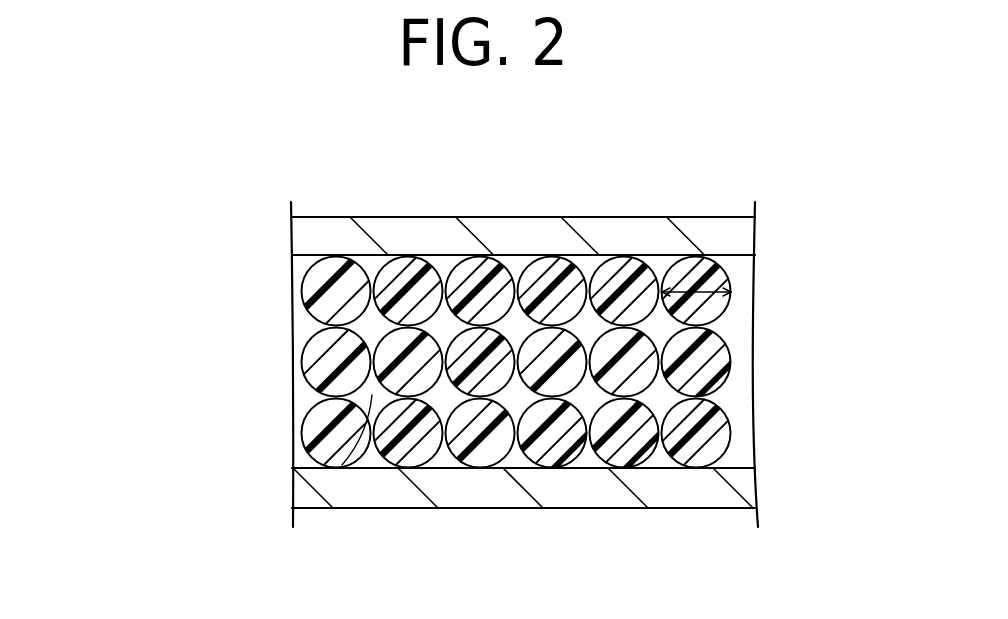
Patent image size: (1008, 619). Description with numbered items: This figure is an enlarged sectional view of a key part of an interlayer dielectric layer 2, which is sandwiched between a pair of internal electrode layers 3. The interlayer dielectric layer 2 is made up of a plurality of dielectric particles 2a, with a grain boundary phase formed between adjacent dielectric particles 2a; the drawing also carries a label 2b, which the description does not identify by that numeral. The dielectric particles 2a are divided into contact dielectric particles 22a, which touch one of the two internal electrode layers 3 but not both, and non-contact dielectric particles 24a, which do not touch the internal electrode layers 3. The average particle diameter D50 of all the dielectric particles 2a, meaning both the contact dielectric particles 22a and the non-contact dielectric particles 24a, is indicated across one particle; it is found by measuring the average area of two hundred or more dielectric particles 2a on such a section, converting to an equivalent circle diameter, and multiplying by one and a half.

The interlayer dielectric layer 2 is at (90, 338).
The dielectric particles 2a is at (165, 283).
The current collector layer 2b is at (330, 487).
The contact dielectric particles 22a is at (325, 287).
The non-contact dielectric particles 24a is at (322, 365).
The internal electrode layers 3 is at (712, 230).
The average particle diameter D50 is at (690, 293).